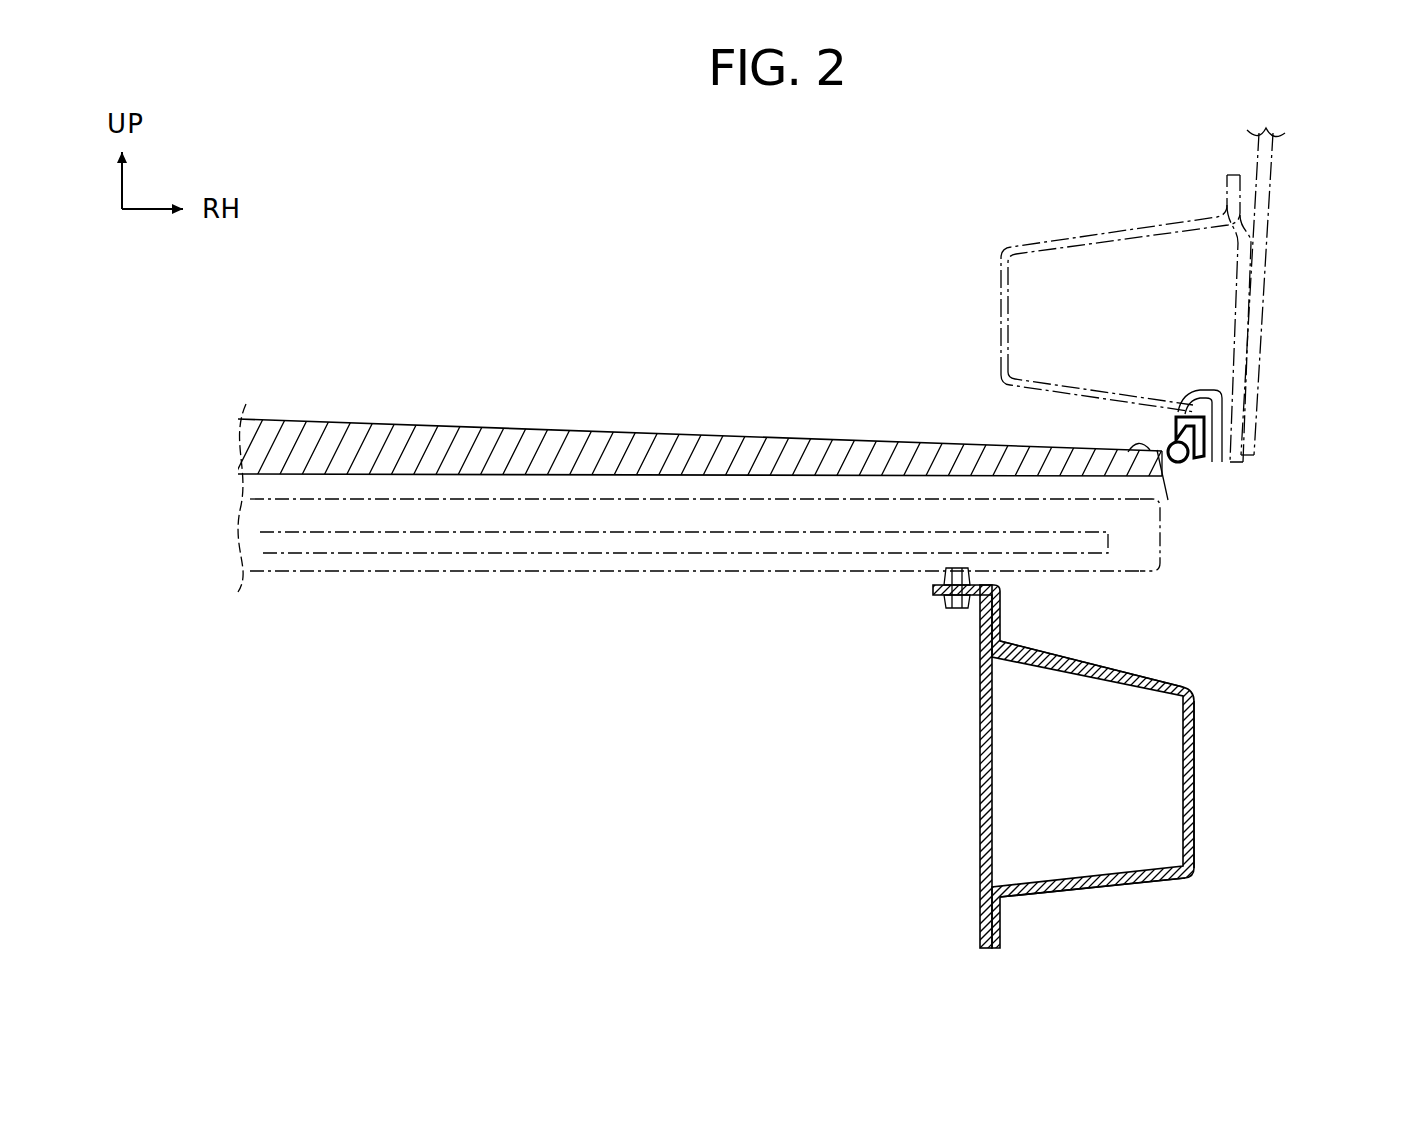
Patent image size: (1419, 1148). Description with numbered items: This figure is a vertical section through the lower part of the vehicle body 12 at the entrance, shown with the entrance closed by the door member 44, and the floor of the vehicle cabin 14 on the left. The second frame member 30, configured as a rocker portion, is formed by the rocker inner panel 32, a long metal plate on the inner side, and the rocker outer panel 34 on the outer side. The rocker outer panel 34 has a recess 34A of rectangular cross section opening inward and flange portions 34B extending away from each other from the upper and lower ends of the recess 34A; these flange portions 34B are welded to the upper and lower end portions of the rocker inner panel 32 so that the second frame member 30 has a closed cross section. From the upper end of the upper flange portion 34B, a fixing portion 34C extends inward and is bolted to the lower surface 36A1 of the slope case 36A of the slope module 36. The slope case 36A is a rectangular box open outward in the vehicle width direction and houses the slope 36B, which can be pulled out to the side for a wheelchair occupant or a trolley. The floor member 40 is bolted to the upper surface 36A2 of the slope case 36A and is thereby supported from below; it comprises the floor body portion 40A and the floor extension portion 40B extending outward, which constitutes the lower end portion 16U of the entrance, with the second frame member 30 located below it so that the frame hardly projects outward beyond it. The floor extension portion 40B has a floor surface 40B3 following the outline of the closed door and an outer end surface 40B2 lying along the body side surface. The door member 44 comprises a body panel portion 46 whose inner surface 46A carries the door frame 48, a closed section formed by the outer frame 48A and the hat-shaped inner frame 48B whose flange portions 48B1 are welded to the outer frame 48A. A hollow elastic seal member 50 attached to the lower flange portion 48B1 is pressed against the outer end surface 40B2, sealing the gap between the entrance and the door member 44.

The body 12 is at (1256, 688).
The vehicle cabin 14 is at (609, 233).
The lower end portion of the entrance 16U is at (1162, 478).
The second frame member 30 is at (1205, 888).
The rocker inner panel 32 is at (978, 765).
The rocker outer panel 34 is at (1180, 686).
The recess 34A is at (1200, 762).
The flange portion 34B is at (998, 643).
The fixing portion 34C is at (947, 588).
The slope module 36 is at (405, 645).
The slope case 36A is at (511, 574).
The lower surface of the slope case 36A1 is at (632, 573).
The upper surface of the slope case 36A2 is at (598, 498).
The slope 36B is at (786, 552).
The floor member 40 is at (410, 392).
The floor body portion 40A is at (535, 428).
The floor extension portion 40B is at (857, 442).
The outer end surface 40B2 is at (1165, 465).
The floor surface 40B3 is at (1073, 450).
The door member 44 is at (1088, 182).
The body panel portion 46 is at (1274, 210).
The inner surface 46A is at (1265, 150).
The door frame 48 is at (1166, 289).
The outer frame 48A is at (1236, 315).
The inner frame 48B is at (1002, 245).
The flange portion 48B1 is at (1203, 458).
The seal member 50 is at (1192, 414).